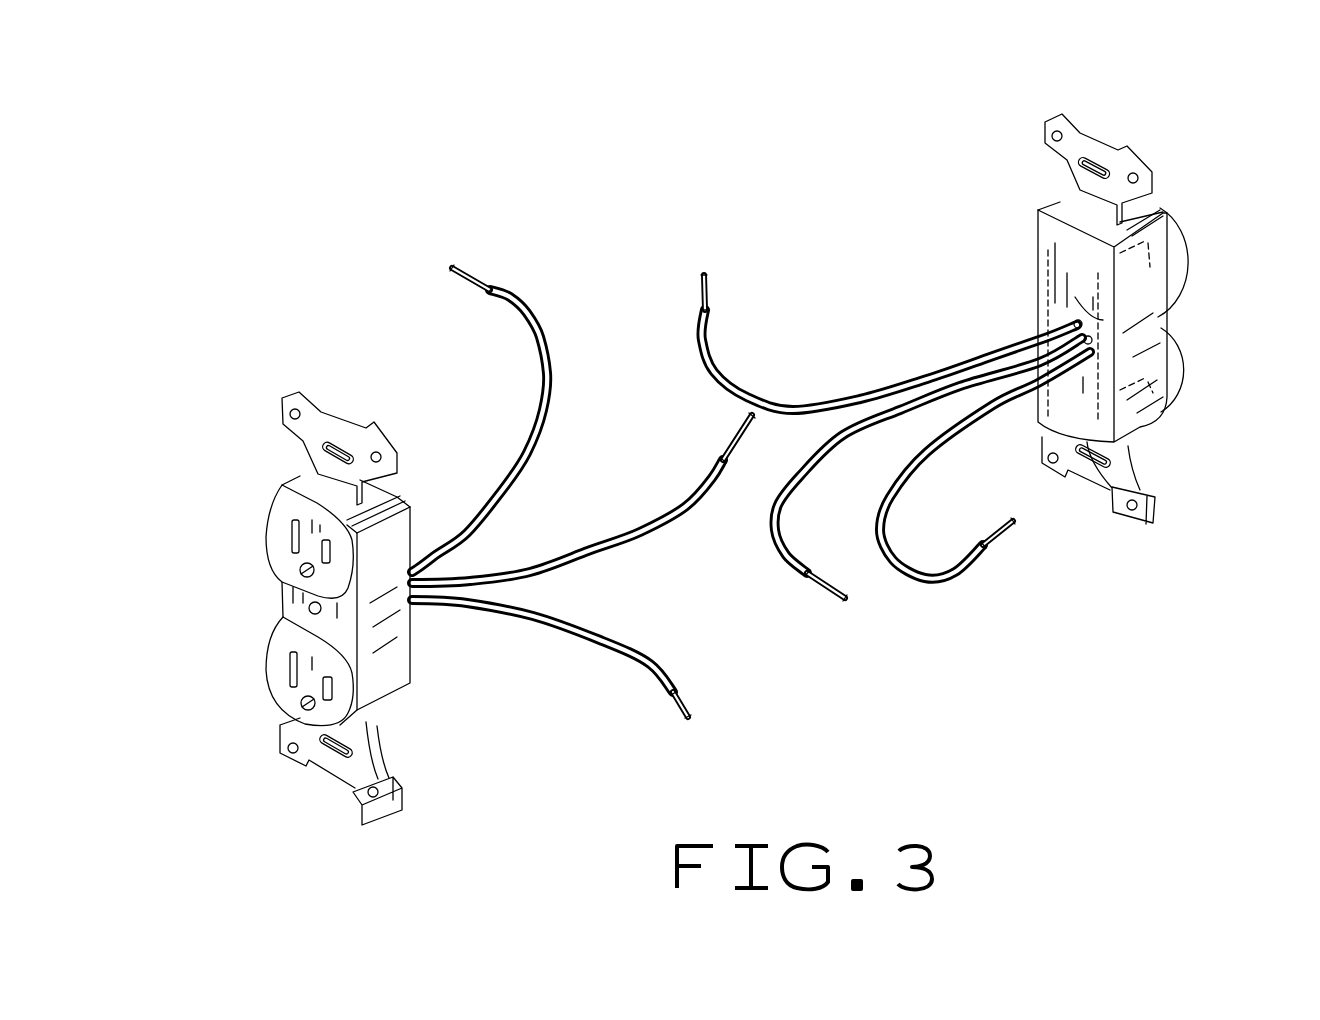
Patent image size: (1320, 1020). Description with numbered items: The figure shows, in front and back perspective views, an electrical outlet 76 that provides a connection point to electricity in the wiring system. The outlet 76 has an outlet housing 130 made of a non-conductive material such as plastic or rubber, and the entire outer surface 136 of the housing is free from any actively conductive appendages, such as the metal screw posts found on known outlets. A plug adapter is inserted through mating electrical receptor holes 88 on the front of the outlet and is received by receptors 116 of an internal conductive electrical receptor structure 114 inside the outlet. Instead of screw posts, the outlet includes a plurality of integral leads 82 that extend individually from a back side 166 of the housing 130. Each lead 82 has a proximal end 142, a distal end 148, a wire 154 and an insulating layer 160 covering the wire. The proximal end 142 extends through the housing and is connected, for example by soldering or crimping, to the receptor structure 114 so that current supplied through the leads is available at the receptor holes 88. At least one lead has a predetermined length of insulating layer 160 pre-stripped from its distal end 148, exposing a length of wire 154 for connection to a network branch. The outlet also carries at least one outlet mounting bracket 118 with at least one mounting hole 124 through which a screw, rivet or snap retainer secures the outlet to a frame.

The electrical outlet 76 is at (302, 485).
The integral lead 82 is at (547, 420).
The electrical receptor hole 88 is at (307, 568).
The electrical receptor structure 114 is at (1038, 200).
The receptor 116 is at (1038, 208).
The outlet mounting bracket 118 is at (303, 397).
The mounting hole 124 is at (339, 428).
The outlet housing 130 is at (410, 662).
The outer surface 136 is at (407, 530).
The proximal end 142 is at (1062, 325).
The distal end 148 is at (448, 265).
The wire 154 is at (473, 280).
The insulating layer 160 is at (533, 367).
The back side 166 is at (1120, 320).